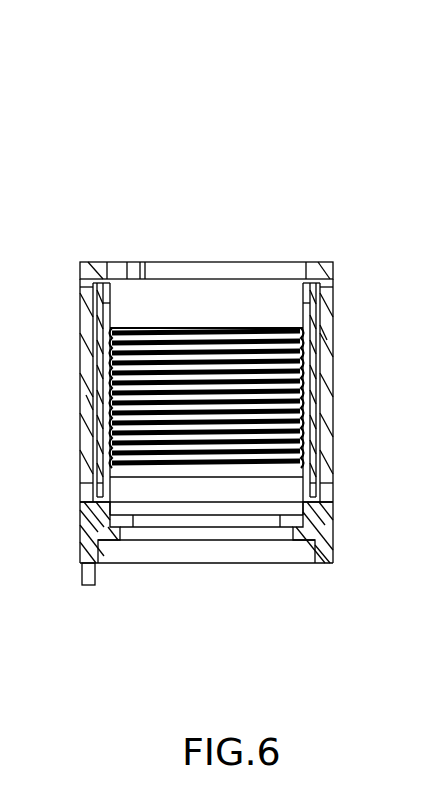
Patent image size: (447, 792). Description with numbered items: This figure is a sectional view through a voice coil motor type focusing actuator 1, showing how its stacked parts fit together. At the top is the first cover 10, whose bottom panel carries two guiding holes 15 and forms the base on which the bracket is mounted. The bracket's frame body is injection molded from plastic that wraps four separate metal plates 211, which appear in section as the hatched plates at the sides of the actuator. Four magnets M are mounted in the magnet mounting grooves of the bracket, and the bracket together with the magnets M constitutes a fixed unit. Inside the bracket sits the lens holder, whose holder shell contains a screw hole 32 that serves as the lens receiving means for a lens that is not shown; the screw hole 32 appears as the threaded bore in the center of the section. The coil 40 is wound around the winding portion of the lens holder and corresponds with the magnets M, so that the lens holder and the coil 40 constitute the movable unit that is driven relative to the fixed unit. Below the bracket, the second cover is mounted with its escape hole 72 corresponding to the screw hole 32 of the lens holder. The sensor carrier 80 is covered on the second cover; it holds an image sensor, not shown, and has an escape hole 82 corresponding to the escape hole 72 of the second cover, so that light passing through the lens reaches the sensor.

The sealing device 1 is at (84, 122).
The first cover 10 is at (323, 240).
The guiding holes 15 is at (218, 262).
The metal plates 211 is at (82, 383).
The coil 40 is at (103, 353).
The magnets M is at (87, 407).
The screw hole 32 is at (234, 466).
The sensor carrier 80 is at (348, 522).
The escape hole 82 is at (270, 542).
The escape hole 72 is at (157, 528).